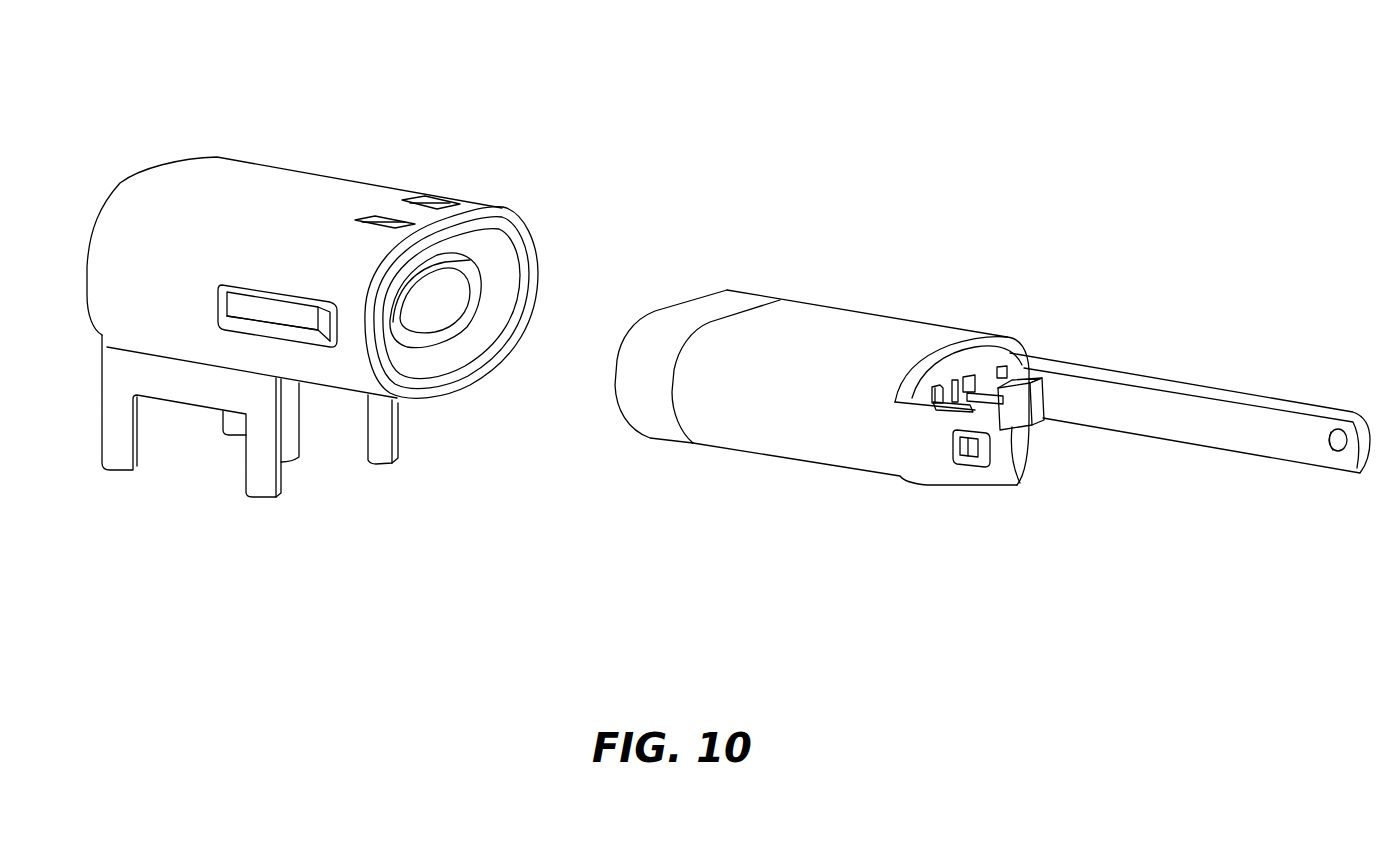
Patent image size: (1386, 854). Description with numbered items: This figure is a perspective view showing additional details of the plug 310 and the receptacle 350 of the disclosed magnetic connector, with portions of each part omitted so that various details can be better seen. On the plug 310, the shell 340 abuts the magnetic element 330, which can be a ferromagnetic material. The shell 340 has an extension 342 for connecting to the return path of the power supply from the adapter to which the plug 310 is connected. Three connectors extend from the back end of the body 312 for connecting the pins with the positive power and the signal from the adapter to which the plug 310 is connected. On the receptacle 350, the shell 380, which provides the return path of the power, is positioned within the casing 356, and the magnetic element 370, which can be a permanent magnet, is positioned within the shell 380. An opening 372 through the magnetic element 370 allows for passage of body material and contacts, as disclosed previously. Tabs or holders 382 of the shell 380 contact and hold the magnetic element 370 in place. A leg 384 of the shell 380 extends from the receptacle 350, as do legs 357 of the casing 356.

The receptacle 350 is at (91, 130).
The casing 356 is at (295, 168).
The legs 357 is at (106, 474).
The tabs or holders 382 is at (250, 287).
The magnetic element 370 is at (480, 258).
The opening 372 is at (465, 292).
The shell 380 is at (451, 368).
The leg 384 is at (299, 462).
The plug 310 is at (943, 199).
The magnetic element 330 is at (728, 289).
The shell 340 is at (732, 449).
The body 312 is at (943, 380).
The extension 342 is at (1322, 402).